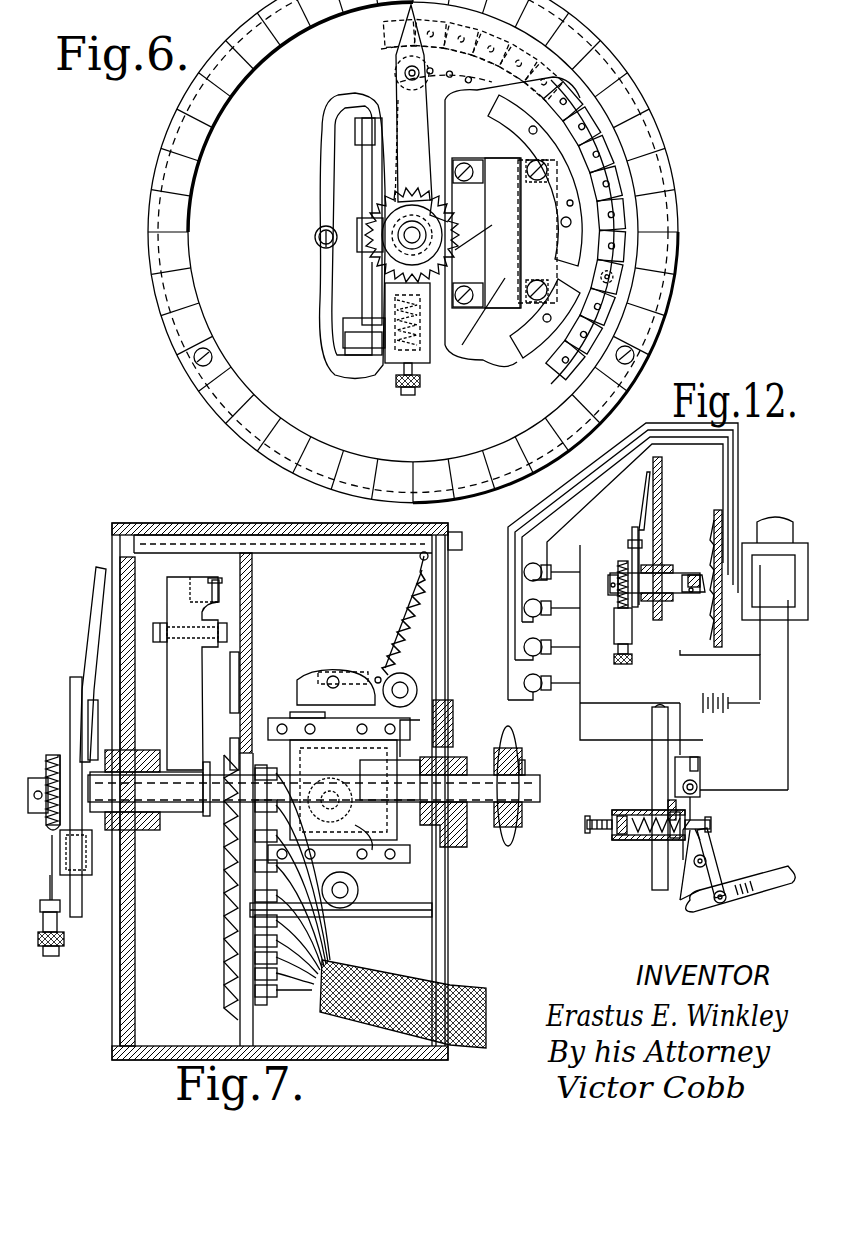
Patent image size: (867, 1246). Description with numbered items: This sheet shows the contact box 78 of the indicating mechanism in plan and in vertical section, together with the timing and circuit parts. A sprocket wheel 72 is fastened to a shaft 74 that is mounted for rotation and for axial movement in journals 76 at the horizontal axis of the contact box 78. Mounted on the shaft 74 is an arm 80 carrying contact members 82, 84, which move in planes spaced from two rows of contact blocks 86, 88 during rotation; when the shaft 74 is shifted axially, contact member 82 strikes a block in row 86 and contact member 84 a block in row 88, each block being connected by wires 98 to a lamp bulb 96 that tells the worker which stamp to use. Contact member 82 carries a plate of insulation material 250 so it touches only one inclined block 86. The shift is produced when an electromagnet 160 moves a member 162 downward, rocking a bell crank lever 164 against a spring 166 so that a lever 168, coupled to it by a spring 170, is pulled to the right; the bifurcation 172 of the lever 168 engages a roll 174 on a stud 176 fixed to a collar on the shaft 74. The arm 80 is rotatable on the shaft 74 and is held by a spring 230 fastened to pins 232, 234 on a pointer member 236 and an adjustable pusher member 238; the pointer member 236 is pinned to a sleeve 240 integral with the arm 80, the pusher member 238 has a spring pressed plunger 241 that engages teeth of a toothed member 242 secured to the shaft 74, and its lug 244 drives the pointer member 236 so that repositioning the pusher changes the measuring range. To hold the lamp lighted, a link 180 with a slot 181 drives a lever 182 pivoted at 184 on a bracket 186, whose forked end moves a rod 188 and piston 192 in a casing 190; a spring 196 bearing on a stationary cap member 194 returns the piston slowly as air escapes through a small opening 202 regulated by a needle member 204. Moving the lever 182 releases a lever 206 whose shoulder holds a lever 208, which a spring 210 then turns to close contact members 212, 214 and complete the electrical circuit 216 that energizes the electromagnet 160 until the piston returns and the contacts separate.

In FIG. 7, the sprocket wheel 72 is at (508, 846).
In FIG. 12, the sprocket wheel 72 is at (660, 798).
In FIG. 6, the shaft 74 is at (409, 237).
In FIG. 7, the shaft 74 is at (528, 790).
In FIG. 7, the journals 76 is at (162, 824).
In FIG. 6, the contact box 78 is at (146, 237).
In FIG. 7, the contact box 78 is at (196, 522).
In FIG. 6, the arm 80 is at (402, 93).
In FIG. 7, the arm 80 is at (176, 687).
In FIG. 7, the contact member 82 is at (222, 594).
In FIG. 12, the contact member 82 is at (690, 595).
In FIG. 7, the contact member 84 is at (229, 632).
In FIG. 6, the contact blocks 86 is at (603, 160).
In FIG. 7, the contact blocks 86 is at (238, 880).
In FIG. 12, the contact blocks 86 is at (713, 540).
In FIG. 6, the contact blocks 88 is at (560, 148).
In FIG. 7, the contact blocks 88 is at (230, 755).
In FIG. 12, the lamp bulb 96 is at (522, 612).
In FIG. 7, the wires 98 is at (322, 945).
In FIG. 12, the wires 98 is at (580, 640).
In FIG. 6, the electromagnet 160 is at (505, 278).
In FIG. 7, the electromagnet 160 is at (365, 750).
In FIG. 12, the electromagnet 160 is at (775, 570).
In FIG. 7, the member 162 is at (302, 690).
In FIG. 7, the bell crank lever 164 is at (376, 676).
In FIG. 7, the spring 166 is at (390, 640).
In FIG. 6, the lever 168 is at (388, 292).
In FIG. 7, the lever 168 is at (345, 875).
In FIG. 6, the spring 170 is at (322, 241).
In FIG. 7, the spring 170 is at (371, 829).
In FIG. 7, the bifurcation 172 is at (328, 750).
In FIG. 7, the roll 174 is at (300, 740).
In FIG. 7, the stud 176 is at (330, 812).
In FIG. 12, the link 180 is at (778, 884).
In FIG. 12, the slot 181 is at (694, 905).
In FIG. 12, the lever 182 is at (712, 873).
In FIG. 12, the pivot 184 is at (690, 885).
In FIG. 12, the bracket 186 is at (696, 868).
In FIG. 12, the rod 188 is at (705, 832).
In FIG. 12, the casing 190 is at (615, 838).
In FIG. 12, the piston 192 is at (632, 822).
In FIG. 12, the cap member 194 is at (712, 822).
In FIG. 12, the spring 196 is at (672, 835).
In FIG. 12, the opening 202 is at (620, 822).
In FIG. 12, the needle member 204 is at (586, 826).
In FIG. 12, the lever 206 is at (698, 812).
In FIG. 12, the lever 208 is at (700, 780).
In FIG. 12, the spring 210 is at (668, 808).
In FIG. 12, the contact member 212 is at (698, 762).
In FIG. 12, the contact member 214 is at (690, 757).
In FIG. 12, the electrical circuit 216 is at (790, 720).
In FIG. 7, the spring 230 is at (92, 770).
In FIG. 7, the pin 232 is at (108, 770).
In FIG. 7, the pin 234 is at (82, 830).
In FIG. 6, the pointer member 236 is at (399, 55).
In FIG. 7, the pointer member 236 is at (92, 633).
In FIG. 12, the pointer member 236 is at (646, 510).
In FIG. 6, the pusher member 238 is at (408, 163).
In FIG. 7, the pusher member 238 is at (78, 695).
In FIG. 12, the pusher member 238 is at (633, 545).
In FIG. 7, the sleeve 240 is at (162, 760).
In FIG. 6, the spring pressed plunger 241 is at (465, 262).
In FIG. 7, the spring pressed plunger 241 is at (52, 840).
In FIG. 6, the toothed member 242 is at (440, 228).
In FIG. 7, the toothed member 242 is at (50, 745).
In FIG. 12, the toothed member 242 is at (620, 578).
In FIG. 7, the lug 244 is at (90, 700).
In FIG. 12, the plate of insulation material 250 is at (698, 574).